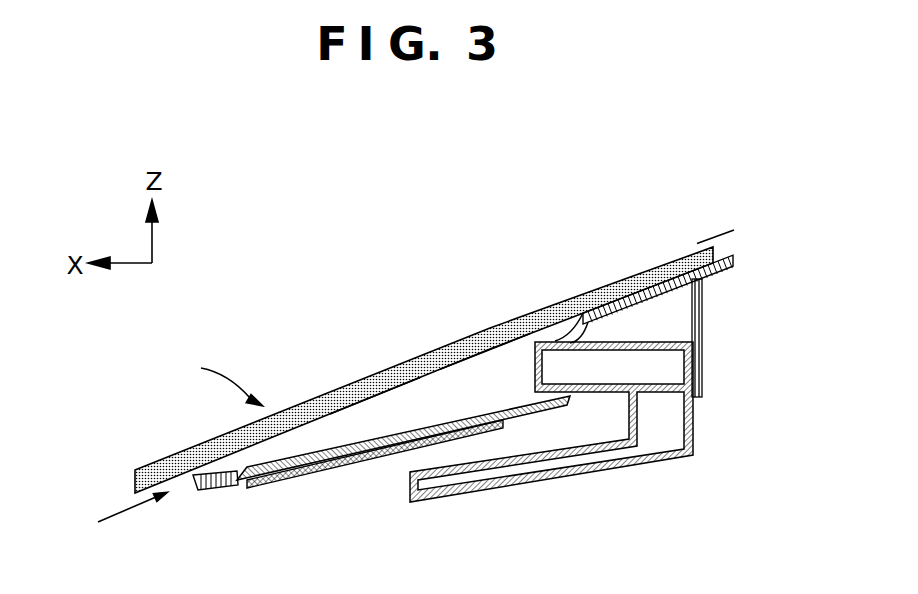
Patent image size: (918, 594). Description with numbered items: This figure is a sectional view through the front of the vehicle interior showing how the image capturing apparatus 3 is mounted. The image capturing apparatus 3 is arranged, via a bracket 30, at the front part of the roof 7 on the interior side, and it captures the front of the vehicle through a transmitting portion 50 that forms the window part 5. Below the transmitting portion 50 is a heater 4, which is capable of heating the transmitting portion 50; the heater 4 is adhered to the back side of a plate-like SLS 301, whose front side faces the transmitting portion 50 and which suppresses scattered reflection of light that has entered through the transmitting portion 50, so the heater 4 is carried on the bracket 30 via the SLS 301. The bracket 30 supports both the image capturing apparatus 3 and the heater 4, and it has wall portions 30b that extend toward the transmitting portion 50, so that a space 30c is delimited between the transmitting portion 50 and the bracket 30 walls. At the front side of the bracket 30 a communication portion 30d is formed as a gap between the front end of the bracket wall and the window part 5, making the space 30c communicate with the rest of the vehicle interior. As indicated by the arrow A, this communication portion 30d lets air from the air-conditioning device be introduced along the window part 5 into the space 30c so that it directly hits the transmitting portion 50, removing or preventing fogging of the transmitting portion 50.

The image capturing apparatus 3 is at (503, 488).
The heater 4 is at (350, 465).
The window part 5 is at (221, 378).
The roof 7 is at (726, 236).
The bracket 30 is at (720, 277).
The wall portions 30b is at (477, 367).
The space 30c is at (388, 407).
The communication portion 30d is at (190, 474).
The transmitting portion 50 is at (433, 348).
The SLS (stray light suppression structure) 301 is at (250, 467).
The arrow A is at (122, 516).